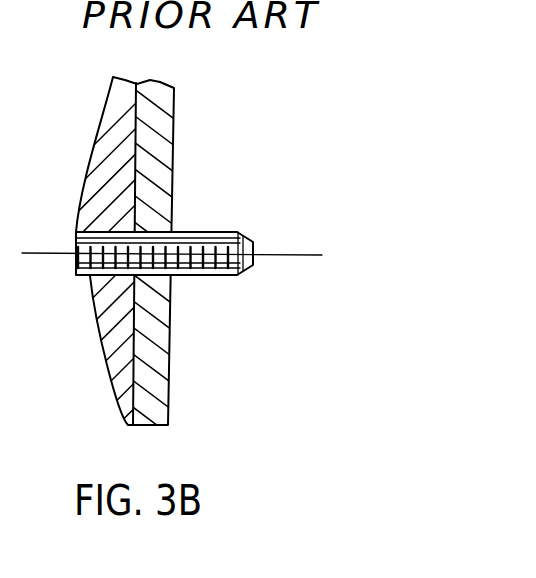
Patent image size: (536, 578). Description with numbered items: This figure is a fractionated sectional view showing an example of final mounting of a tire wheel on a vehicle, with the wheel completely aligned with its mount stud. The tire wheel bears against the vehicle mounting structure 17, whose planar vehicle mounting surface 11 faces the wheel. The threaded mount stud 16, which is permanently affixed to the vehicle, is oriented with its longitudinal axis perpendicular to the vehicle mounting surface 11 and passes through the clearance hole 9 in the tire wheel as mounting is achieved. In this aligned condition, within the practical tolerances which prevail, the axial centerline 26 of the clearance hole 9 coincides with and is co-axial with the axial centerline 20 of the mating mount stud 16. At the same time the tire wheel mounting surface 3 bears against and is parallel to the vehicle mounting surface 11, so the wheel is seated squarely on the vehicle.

The threaded mount stud 16 is at (229, 233).
The clearance hole 9 is at (168, 283).
The tire wheel mounting surface 3 is at (159, 251).
The vehicle mounting surface 11 is at (133, 358).
The vehicle mounting structure 17 is at (108, 337).
The axial centerline of mount stud 20 is at (213, 259).
The axial centerline of clearance hole 26 is at (213, 259).